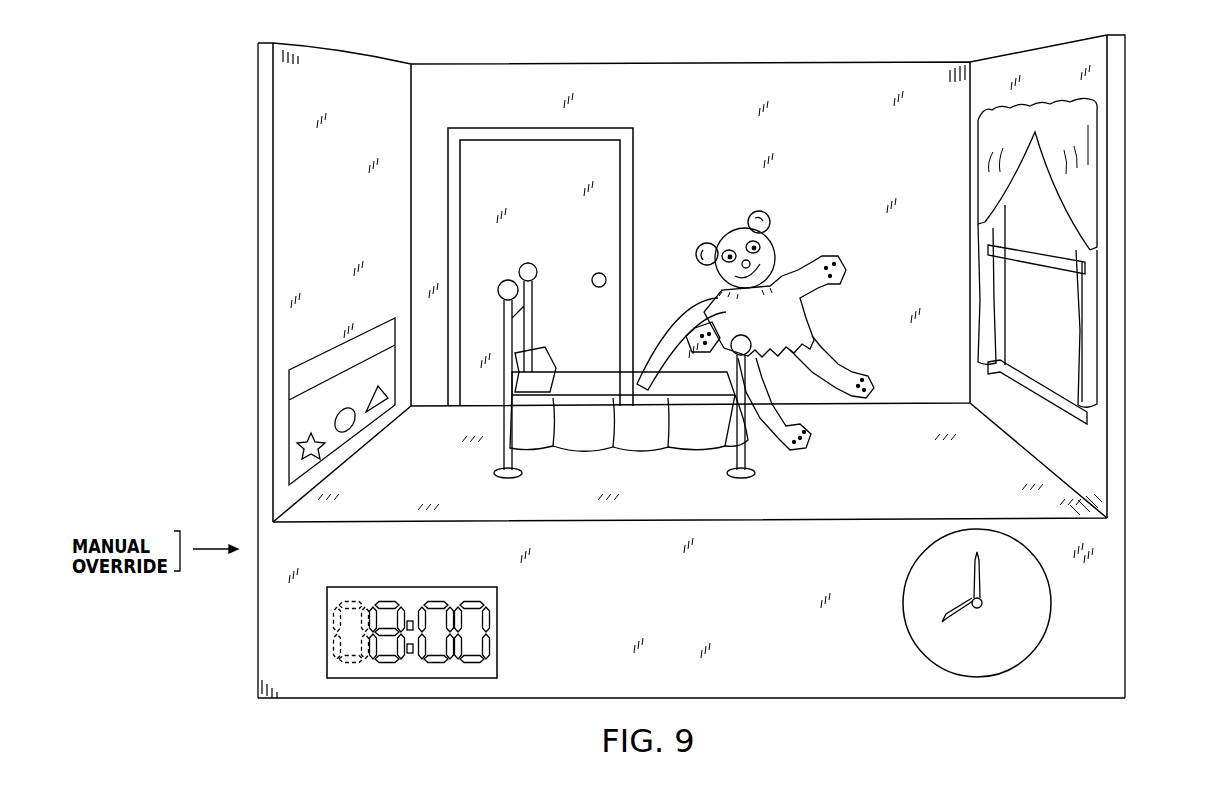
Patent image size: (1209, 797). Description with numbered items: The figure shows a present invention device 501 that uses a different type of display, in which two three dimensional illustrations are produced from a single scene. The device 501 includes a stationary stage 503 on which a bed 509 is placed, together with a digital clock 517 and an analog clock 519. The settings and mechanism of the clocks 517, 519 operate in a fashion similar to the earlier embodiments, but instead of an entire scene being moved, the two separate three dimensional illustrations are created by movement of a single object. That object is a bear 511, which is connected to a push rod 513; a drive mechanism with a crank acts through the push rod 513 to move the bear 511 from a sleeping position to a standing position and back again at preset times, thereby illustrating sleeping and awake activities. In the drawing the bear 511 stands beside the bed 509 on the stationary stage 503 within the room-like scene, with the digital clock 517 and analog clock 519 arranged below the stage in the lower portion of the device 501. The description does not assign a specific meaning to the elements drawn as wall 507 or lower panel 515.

The present invention device 501 is at (934, 47).
The stationary stage 503 is at (1060, 500).
The back wall 507 is at (752, 78).
The bed 509 is at (590, 392).
The bear 511 is at (798, 316).
The push rod 513 is at (672, 332).
The control panel 515 is at (1098, 612).
The digital clock 517 is at (499, 633).
The analog clock 519 is at (912, 638).